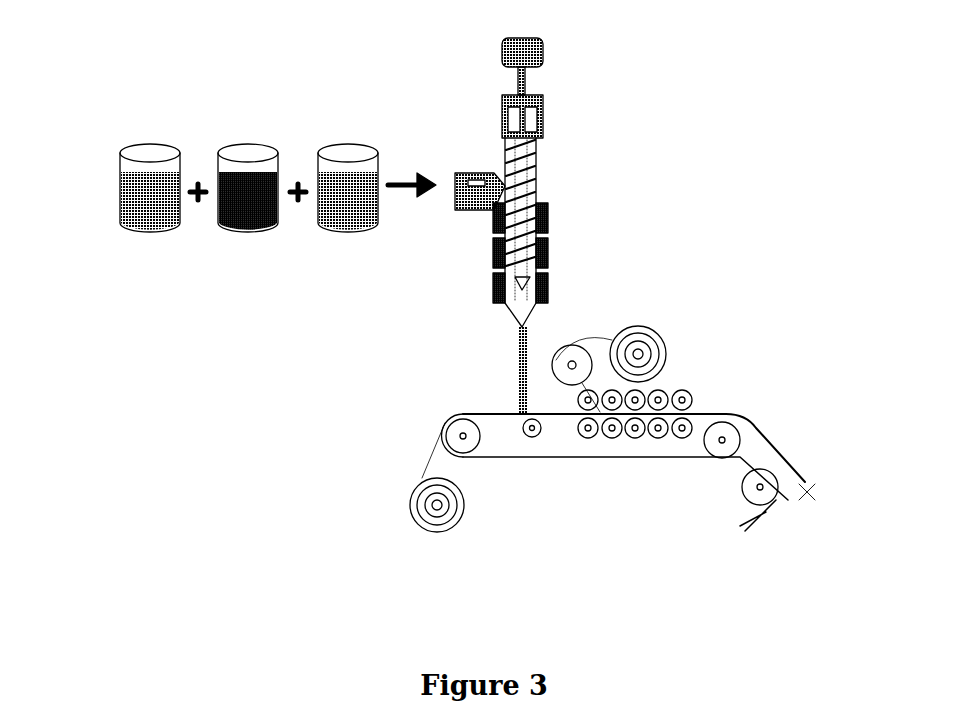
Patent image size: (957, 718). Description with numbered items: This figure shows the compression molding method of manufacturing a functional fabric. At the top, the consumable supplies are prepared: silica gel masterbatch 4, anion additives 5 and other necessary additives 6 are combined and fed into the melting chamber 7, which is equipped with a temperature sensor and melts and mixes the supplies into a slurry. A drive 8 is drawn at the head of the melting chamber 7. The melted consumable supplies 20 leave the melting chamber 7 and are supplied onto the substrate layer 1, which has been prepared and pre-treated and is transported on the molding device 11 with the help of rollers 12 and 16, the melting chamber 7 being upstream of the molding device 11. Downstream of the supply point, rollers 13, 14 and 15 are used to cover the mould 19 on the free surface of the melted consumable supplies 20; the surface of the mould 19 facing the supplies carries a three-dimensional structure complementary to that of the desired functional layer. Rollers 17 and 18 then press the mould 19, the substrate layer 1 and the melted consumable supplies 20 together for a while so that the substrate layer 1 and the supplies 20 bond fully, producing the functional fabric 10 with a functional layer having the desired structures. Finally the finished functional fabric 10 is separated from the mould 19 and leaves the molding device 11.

The substrate layer 1 is at (427, 457).
The silica gel masterbatch 4 is at (155, 118).
The anion additives 5 is at (250, 118).
The other necessary additives 6 is at (348, 118).
The melting chamber 7 is at (567, 203).
The extruder drive 8 is at (505, 88).
The functional fabric 10 is at (740, 533).
The molding device 11 is at (520, 480).
The roller 12 is at (422, 498).
The roller 13 is at (667, 352).
The roller 14 is at (557, 357).
The roller 15 is at (812, 478).
The roller 16 is at (742, 480).
The roller 17 is at (683, 383).
The roller 18 is at (620, 432).
The mould 19 is at (587, 337).
The consumable supplies 20 is at (515, 347).